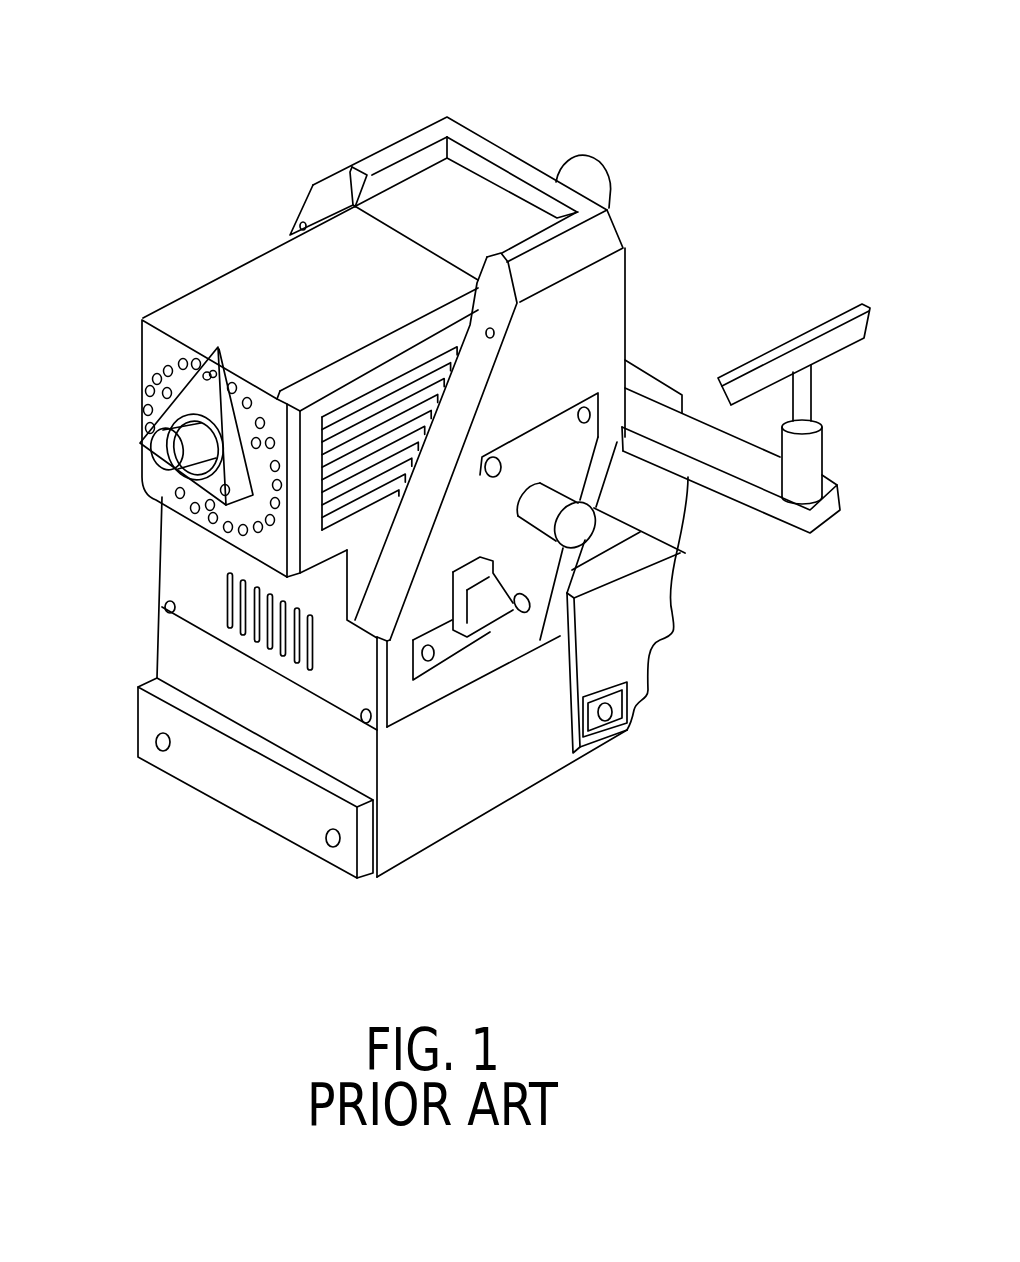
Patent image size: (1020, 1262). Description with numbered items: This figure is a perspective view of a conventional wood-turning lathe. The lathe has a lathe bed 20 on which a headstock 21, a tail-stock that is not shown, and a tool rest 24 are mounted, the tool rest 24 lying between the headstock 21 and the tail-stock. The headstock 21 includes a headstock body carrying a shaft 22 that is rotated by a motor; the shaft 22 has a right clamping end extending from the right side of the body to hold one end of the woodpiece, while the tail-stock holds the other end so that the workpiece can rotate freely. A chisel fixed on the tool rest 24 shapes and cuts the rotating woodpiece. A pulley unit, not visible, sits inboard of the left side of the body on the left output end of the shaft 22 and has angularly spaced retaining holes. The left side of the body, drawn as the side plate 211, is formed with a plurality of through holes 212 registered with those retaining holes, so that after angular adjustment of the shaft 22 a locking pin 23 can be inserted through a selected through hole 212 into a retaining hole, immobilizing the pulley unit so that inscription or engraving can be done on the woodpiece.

The lathe bed 20 is at (536, 808).
The headstock 21 is at (250, 260).
The side plate 211 is at (151, 335).
The through holes 212 is at (212, 360).
The locking pin 23 is at (206, 376).
The shaft 22 is at (572, 174).
The tool rest 24 is at (789, 363).